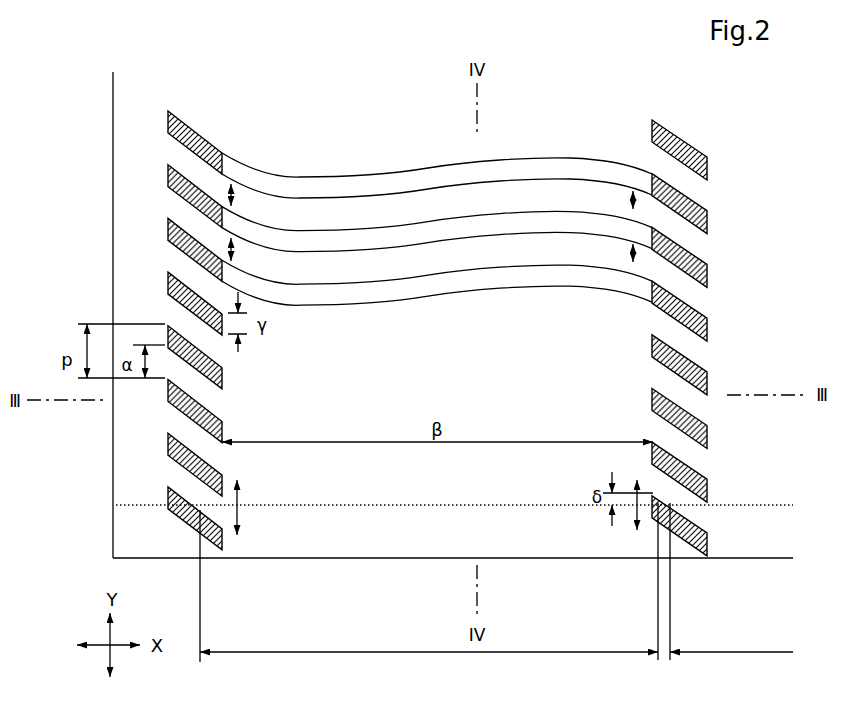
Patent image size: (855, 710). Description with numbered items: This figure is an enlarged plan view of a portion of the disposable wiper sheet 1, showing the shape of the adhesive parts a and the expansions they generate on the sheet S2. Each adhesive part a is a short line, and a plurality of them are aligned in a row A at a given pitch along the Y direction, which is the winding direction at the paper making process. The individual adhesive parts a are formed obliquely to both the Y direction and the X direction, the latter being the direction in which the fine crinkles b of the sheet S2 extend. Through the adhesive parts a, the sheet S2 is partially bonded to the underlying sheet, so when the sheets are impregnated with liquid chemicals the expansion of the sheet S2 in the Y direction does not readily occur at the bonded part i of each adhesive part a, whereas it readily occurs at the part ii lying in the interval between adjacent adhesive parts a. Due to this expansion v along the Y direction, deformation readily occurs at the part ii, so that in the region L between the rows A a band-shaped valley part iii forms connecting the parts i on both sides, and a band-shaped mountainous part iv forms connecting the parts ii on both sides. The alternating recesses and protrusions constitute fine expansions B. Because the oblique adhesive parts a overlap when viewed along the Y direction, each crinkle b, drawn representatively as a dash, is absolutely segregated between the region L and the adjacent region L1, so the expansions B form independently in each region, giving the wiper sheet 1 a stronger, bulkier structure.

The disposable wiper sheet 1 is at (97, 500).
The adhesive part a is at (167, 127).
The crinkle b is at (445, 507).
The row of aligned adhesive parts A is at (243, 377).
The expansion B is at (358, 172).
The sheet S2 is at (305, 562).
The region between rows of adhesive parts L is at (429, 592).
The adjacent region between rows of adhesive parts L1 is at (731, 589).
The bonded part of the adhesive part i is at (192, 128).
The part between adjacent adhesive parts ii is at (177, 155).
The valley part iii is at (480, 227).
The mountainous part iv is at (435, 234).
The expansion along the Y direction v is at (232, 249).